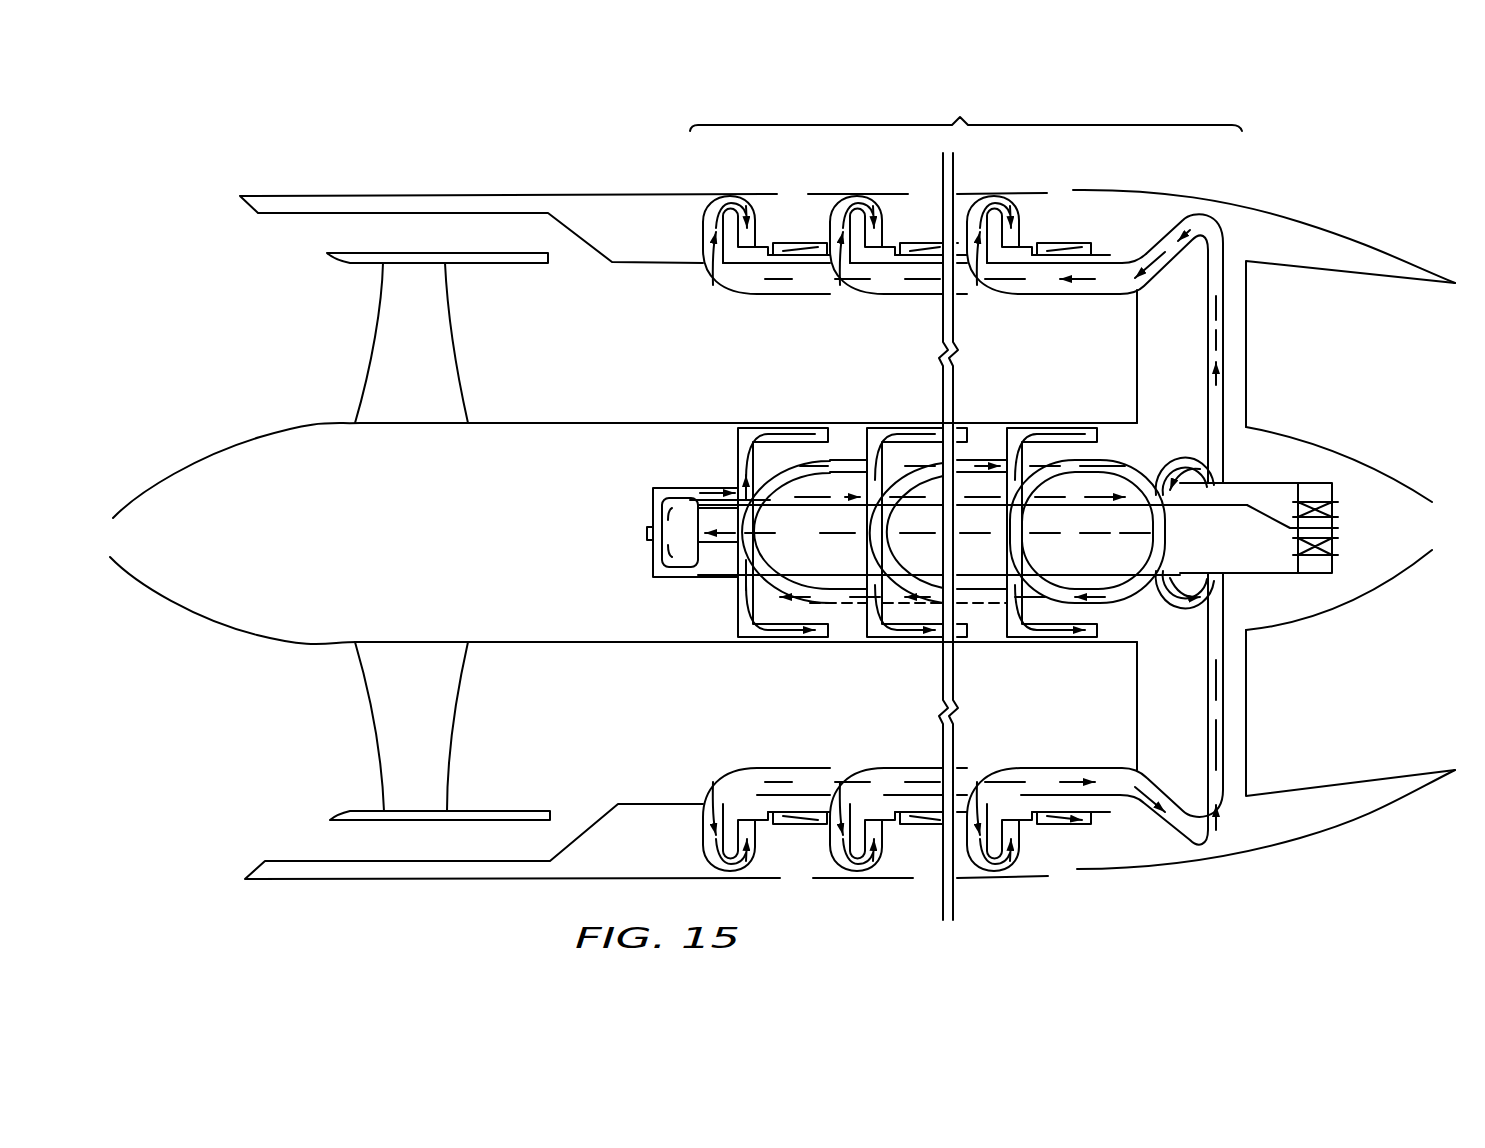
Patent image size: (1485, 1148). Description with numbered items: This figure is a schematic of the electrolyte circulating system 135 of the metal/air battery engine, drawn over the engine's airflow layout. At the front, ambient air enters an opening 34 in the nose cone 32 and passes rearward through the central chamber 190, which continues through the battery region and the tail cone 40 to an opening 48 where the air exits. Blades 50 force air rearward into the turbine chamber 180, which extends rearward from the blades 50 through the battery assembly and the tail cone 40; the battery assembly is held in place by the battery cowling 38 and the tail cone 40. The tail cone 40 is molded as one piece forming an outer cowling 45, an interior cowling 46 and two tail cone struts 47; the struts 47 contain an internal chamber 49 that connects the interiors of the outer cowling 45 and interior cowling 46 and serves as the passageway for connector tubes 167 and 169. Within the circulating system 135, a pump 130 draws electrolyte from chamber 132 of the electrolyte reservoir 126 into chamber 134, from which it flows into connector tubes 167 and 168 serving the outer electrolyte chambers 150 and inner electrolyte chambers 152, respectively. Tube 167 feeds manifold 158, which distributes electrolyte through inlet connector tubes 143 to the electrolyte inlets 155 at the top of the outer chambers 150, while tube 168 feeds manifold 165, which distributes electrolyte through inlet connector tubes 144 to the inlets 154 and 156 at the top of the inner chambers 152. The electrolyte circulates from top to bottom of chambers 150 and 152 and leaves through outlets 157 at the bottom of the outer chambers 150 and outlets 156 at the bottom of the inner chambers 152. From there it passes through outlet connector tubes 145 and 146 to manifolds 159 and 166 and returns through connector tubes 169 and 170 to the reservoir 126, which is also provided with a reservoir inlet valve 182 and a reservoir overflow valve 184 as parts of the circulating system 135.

The nose cone 32 is at (168, 470).
The opening 34 is at (112, 528).
The battery cowling 38 is at (703, 194).
The tail cone 40 is at (1385, 253).
The outer cowling 45 is at (1325, 232).
The interior cowling 46 is at (1395, 472).
The tail cone struts 47 is at (1248, 312).
The opening 48 is at (1435, 551).
The internal chamber 49 is at (1186, 354).
The blades 50 is at (431, 364).
The electrolyte reservoir 126 is at (1288, 483).
The pump 130 is at (668, 578).
The chamber 132 is at (842, 562).
The chamber 134 is at (1268, 492).
The electrolyte circulating system 135 is at (966, 106).
The inlet connector tubes 143 is at (705, 224).
The inlet connector tubes 144 is at (740, 517).
The outlet connector tubes 145 is at (702, 835).
The outlet connector tubes 146 is at (735, 590).
The outer electrolyte chamber 150 is at (818, 243).
The inner electrolyte chamber 152 is at (810, 432).
The electrolyte inlets 154 is at (868, 448).
The electrolyte inlets 155 is at (893, 237).
The electrolyte inlets/outlets 156 is at (858, 620).
The electrolyte outlets 157 is at (885, 848).
The electrolyte manifold 158 is at (1028, 290).
The manifold 159 is at (1045, 768).
The manifold 165 is at (985, 605).
The manifold 166 is at (977, 457).
The connector tube 167 is at (1228, 348).
The connector tube 168 is at (1180, 462).
The connector tube 169 is at (1228, 710).
The connector tube 170 is at (1180, 602).
The turbine chamber 180 is at (519, 364).
The reservoir inlet valve 182 is at (1332, 545).
The reservoir overflow valve 184 is at (1332, 508).
The central chamber 190 is at (237, 567).